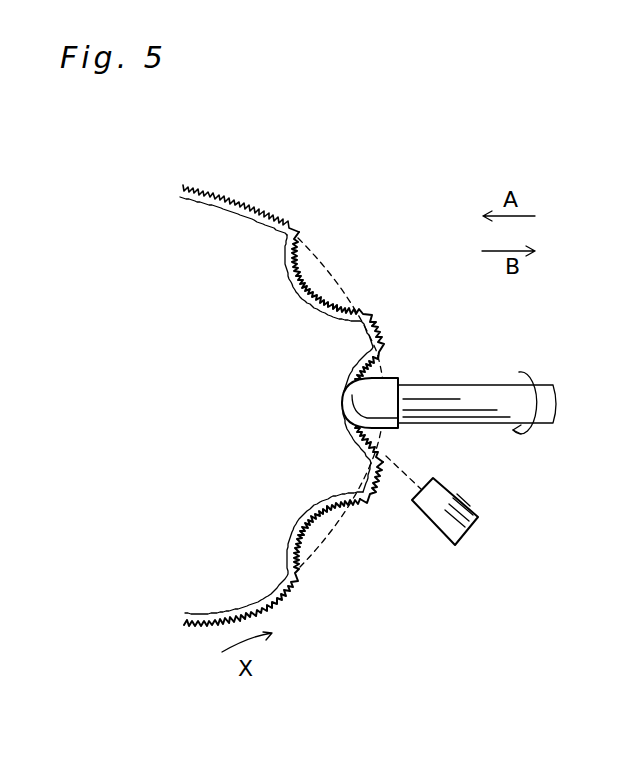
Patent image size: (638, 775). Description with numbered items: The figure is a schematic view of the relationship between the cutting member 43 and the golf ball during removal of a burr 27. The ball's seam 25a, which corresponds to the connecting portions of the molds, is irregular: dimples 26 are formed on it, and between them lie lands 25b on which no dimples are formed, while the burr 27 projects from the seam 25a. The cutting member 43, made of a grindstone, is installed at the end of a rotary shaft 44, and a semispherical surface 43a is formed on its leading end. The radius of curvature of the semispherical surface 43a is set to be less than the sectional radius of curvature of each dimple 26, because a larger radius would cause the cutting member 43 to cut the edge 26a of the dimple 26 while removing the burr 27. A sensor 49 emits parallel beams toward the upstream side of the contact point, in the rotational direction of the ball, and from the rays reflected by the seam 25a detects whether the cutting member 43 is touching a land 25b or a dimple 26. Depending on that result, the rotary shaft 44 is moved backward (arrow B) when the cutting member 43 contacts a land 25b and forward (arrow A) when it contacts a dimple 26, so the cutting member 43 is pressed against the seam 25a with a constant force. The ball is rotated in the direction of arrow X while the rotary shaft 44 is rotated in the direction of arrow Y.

The burr 27 is at (228, 193).
The seam 25a is at (367, 336).
The land 25b is at (364, 487).
The dimple 26 is at (347, 404).
The edge of the dimple 26a is at (371, 462).
The cutting member 43 is at (419, 354).
The semispherical surface 43a is at (383, 377).
The rotary shaft 44 is at (530, 386).
The sensor 49 is at (472, 510).